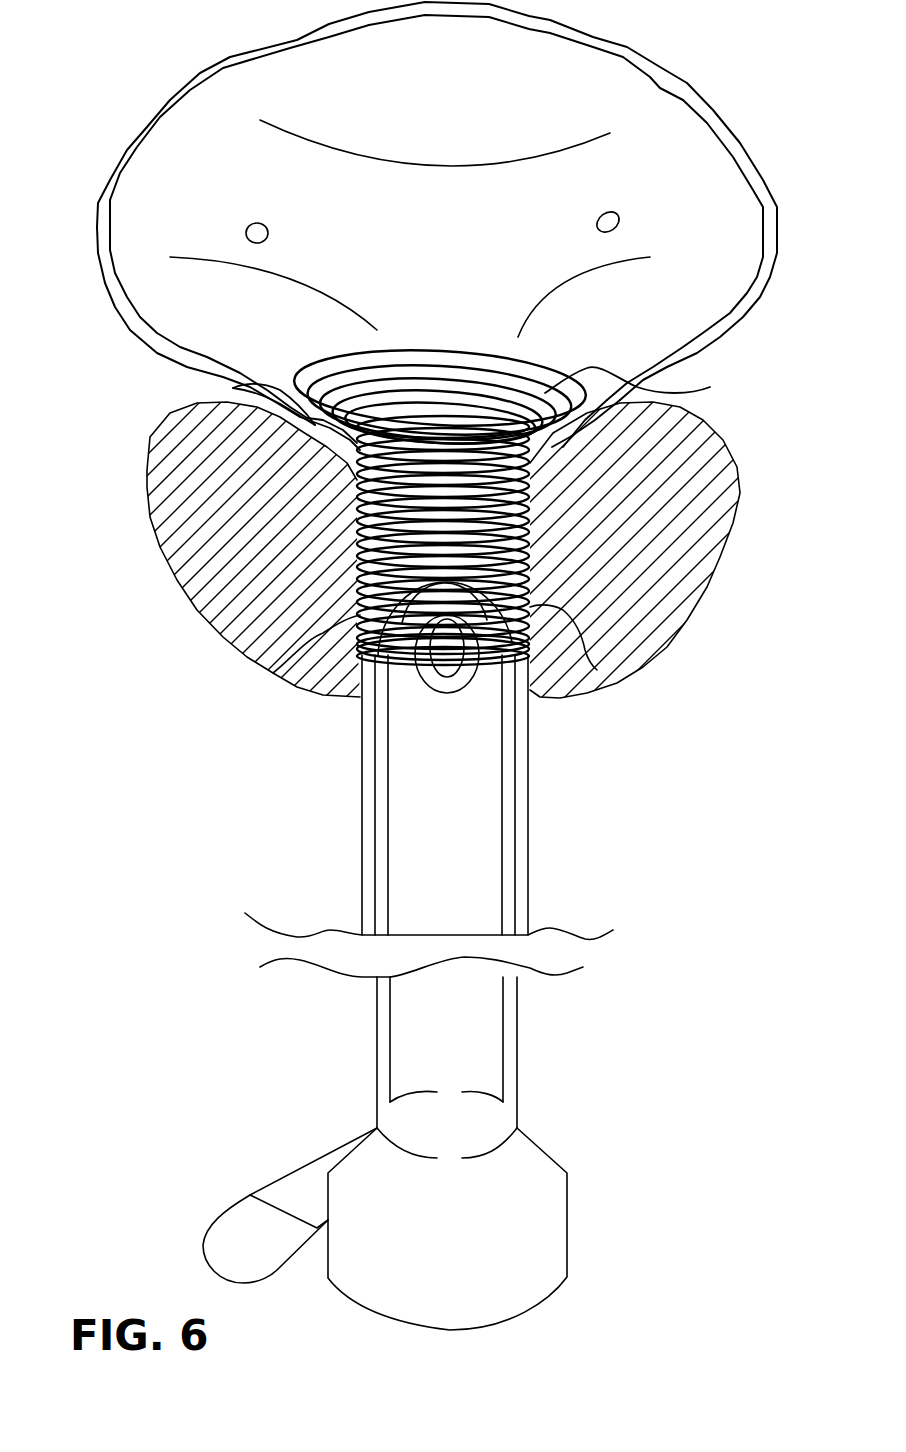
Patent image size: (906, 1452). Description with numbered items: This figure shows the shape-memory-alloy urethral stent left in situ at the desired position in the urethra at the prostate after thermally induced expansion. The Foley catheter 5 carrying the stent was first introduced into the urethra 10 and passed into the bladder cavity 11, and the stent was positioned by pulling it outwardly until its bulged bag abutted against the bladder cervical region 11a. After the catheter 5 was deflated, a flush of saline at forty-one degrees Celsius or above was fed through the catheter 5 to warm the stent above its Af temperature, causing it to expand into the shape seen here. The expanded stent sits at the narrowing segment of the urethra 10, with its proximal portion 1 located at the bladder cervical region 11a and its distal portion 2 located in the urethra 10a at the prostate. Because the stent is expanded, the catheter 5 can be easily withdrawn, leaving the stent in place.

The proximal portion 1 is at (516, 504).
The distal portion 2 is at (597, 670).
The Foley catheter 5 is at (420, 867).
The urethra 10 is at (362, 756).
The urethra at the prostate 10a is at (273, 673).
The bladder cavity 11 is at (154, 122).
The bladder cervical region 11a is at (233, 388).